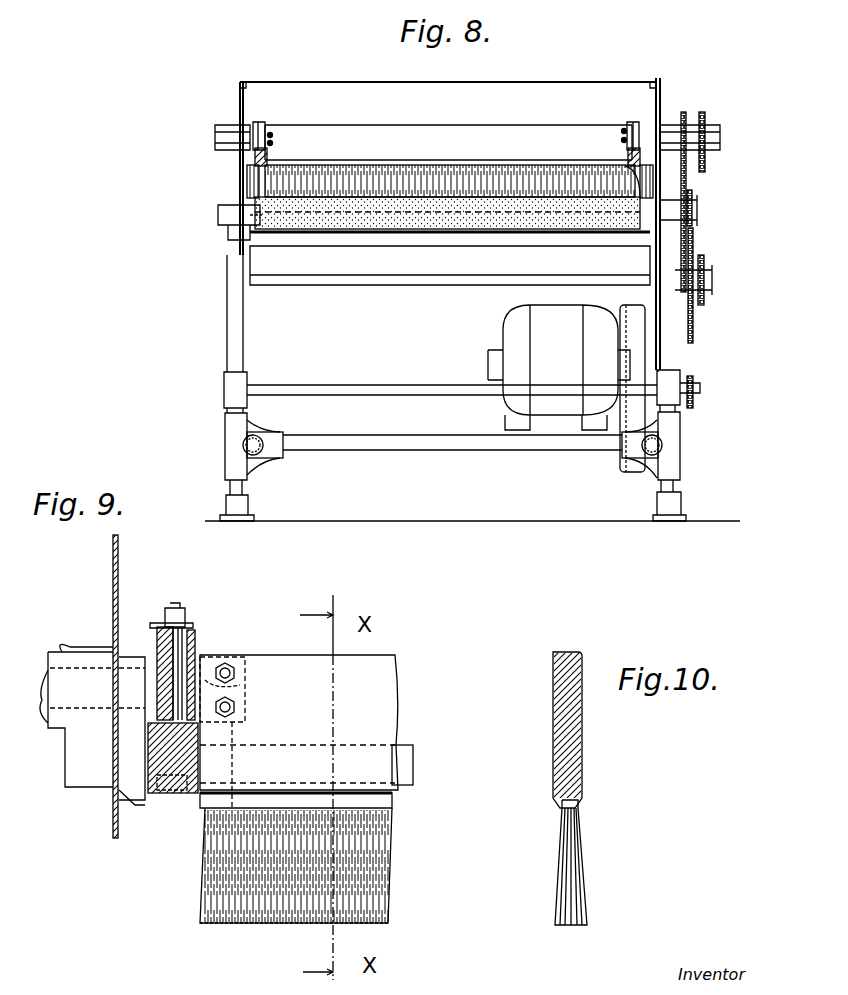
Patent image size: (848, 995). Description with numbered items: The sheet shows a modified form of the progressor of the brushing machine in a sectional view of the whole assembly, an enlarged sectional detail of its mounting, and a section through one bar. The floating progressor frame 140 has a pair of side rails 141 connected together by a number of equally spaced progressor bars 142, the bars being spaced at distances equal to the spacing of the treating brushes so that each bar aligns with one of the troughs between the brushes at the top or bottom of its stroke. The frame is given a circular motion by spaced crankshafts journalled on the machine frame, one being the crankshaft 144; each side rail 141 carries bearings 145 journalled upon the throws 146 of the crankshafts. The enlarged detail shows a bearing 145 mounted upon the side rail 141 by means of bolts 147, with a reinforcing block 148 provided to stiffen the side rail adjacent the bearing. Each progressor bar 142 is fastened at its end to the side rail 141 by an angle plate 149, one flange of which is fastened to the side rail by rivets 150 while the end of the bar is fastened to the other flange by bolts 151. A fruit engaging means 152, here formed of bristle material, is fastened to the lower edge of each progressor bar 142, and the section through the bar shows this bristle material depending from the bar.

In FIG. 8, the progressor frame 140 is at (366, 118).
In FIG. 9, the progressor frame 140 is at (403, 650).
In FIG. 8, the side rails 141 is at (258, 124).
In FIG. 9, the side rails 141 is at (197, 630).
In FIG. 8, the progressor bars 142 is at (469, 125).
In FIG. 9, the progressor bars 142 is at (400, 685).
In FIG. 10, the progressor bars 142 is at (560, 688).
In FIG. 8, the crankshaft 144 is at (220, 135).
In FIG. 9, the crankshaft 144 is at (40, 700).
In FIG. 8, the bearings 145 is at (268, 157).
In FIG. 9, the bearings 145 is at (200, 740).
In FIG. 8, the throws 146 is at (255, 168).
In FIG. 9, the throws 146 is at (408, 765).
In FIG. 9, the bolts 147 is at (180, 607).
In FIG. 9, the reinforcing blocks 148 is at (150, 635).
In FIG. 9, the angle plates 149 is at (222, 657).
In FIG. 9, the rivets 150 is at (248, 688).
In FIG. 8, the bolts 151 is at (273, 143).
In FIG. 9, the bolts 151 is at (236, 672).
In FIG. 8, the fruit engaging means 152 is at (410, 172).
In FIG. 9, the fruit engaging means 152 is at (372, 852).
In FIG. 10, the fruit engaging means 152 is at (575, 852).